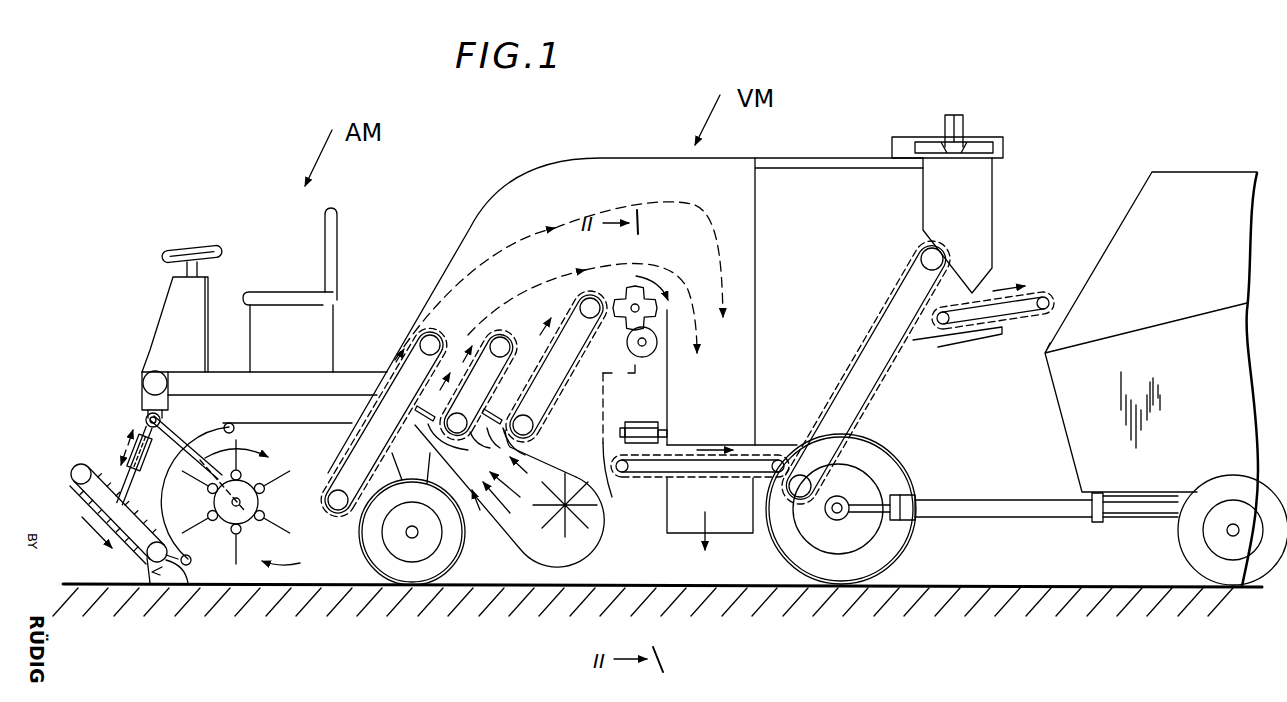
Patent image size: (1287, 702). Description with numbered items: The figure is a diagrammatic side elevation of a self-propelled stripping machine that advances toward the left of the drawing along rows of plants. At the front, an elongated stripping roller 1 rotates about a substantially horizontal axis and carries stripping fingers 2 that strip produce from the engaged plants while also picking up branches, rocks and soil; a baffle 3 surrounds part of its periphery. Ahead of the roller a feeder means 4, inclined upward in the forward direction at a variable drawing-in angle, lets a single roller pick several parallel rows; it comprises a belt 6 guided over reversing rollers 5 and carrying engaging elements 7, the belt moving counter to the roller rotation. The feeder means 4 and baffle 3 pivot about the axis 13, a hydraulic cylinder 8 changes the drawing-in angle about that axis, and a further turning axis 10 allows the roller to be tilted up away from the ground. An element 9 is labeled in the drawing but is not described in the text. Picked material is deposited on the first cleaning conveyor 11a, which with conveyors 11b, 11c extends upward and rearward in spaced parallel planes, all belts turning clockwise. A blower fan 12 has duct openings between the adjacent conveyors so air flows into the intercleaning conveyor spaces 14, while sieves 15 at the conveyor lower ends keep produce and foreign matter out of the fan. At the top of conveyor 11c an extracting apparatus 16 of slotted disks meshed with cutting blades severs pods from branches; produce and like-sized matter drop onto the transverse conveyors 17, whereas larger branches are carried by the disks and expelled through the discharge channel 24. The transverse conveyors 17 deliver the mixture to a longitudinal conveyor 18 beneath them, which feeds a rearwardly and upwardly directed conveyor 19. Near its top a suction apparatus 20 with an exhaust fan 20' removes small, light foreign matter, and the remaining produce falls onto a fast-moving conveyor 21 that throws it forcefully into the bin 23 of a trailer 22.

The stripping roller 1 is at (288, 563).
The stripping fingers 2 is at (283, 533).
The baffle 3 is at (166, 500).
The feeder means 4 is at (97, 550).
The reversing rollers 5 is at (70, 473).
The belt 6 is at (112, 468).
The engaging elements 7 is at (72, 486).
The hydraulic cylinder 8 is at (134, 457).
The pickup rotor 9 is at (259, 501).
The turning axis 10 is at (176, 415).
The cleaning conveyor 11a is at (432, 343).
The cleaning conveyor 11b is at (502, 343).
The cleaning conveyor 11c is at (589, 305).
The blower fan 12 is at (580, 552).
The axis 13 is at (183, 582).
The intercleaning conveyor spaces 14 is at (528, 383).
The sieves 15 is at (519, 450).
The extracting apparatus 16 is at (645, 290).
The transverse conveyor 17 is at (631, 424).
The longitudinal conveyor 18 is at (646, 468).
The conveyor 19 is at (853, 413).
The suction apparatus 20 is at (964, 215).
The exhaust fan 20' is at (975, 121).
The fast-moving conveyor 21 is at (1013, 309).
The trailer 22 is at (1163, 538).
The bin 23 is at (1127, 227).
The discharge channel 24 is at (722, 412).